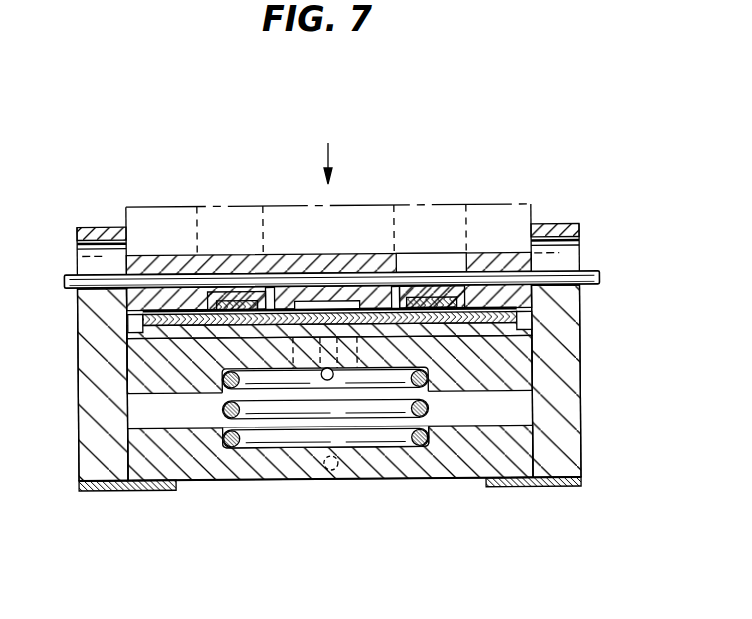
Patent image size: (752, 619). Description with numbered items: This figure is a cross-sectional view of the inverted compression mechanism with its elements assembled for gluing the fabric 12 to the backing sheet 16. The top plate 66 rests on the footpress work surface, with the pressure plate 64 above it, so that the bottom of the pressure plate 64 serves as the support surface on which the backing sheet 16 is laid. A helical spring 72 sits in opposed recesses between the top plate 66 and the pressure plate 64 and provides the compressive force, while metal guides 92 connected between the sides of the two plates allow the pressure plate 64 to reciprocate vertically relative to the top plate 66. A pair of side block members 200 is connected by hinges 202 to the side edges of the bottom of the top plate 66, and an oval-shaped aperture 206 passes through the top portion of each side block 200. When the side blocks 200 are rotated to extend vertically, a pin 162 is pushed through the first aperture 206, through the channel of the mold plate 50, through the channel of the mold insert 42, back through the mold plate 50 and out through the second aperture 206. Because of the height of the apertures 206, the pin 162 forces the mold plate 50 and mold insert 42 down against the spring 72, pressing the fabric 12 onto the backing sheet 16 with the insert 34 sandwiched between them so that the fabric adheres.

The fabric 12 is at (203, 253).
The backing sheet 16 is at (133, 325).
The insert 34 is at (242, 291).
The mold insert 42 is at (368, 254).
The mold plate 50 is at (500, 254).
The pressure plate 64 is at (518, 373).
The top plate 66 is at (457, 463).
The helical spring 72 is at (273, 407).
The metal guides 92 is at (346, 452).
The pin 162 is at (602, 277).
The side block members 200 is at (92, 451).
The hinges 202 is at (115, 487).
The aperture 206 is at (76, 250).